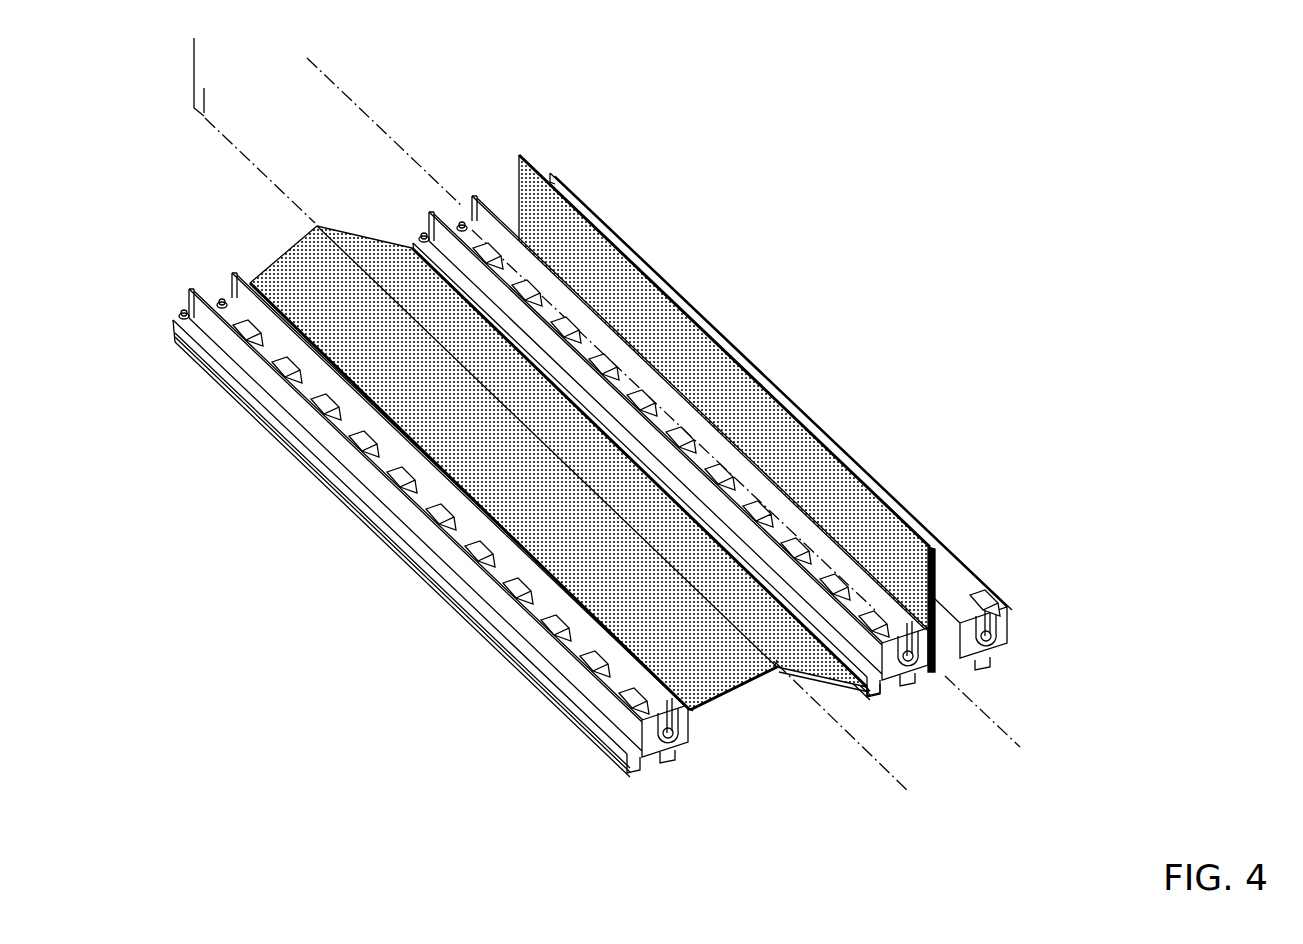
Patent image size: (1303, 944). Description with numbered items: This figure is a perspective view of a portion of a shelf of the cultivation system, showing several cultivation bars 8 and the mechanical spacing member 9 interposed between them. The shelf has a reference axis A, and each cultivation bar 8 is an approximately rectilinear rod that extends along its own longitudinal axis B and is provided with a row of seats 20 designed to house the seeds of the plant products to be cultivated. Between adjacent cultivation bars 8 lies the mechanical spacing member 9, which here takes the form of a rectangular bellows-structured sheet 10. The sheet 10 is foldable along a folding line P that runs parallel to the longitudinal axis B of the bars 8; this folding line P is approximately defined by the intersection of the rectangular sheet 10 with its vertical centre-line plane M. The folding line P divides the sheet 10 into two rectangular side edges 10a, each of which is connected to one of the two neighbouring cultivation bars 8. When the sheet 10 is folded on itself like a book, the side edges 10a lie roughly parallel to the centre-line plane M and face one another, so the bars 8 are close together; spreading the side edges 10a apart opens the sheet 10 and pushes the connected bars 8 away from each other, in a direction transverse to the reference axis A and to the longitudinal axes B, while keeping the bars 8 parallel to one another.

The cultivation bar 8 is at (538, 655).
The mechanical spacing member 9 is at (934, 556).
The rectangular bellows-structured sheet 10 is at (883, 515).
The rectangular side edge 10a is at (283, 247).
The seat 20 is at (268, 357).
The reference axis A is at (863, 748).
The longitudinal axis B is at (330, 81).
The centre-line plane M is at (202, 88).
The folding line P is at (652, 500).